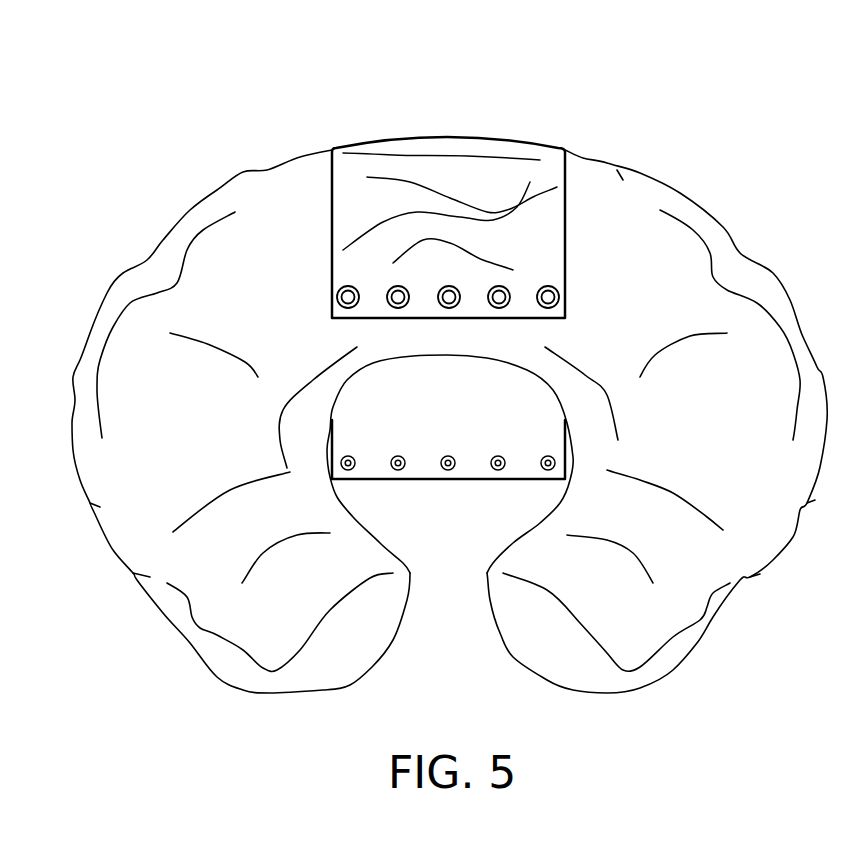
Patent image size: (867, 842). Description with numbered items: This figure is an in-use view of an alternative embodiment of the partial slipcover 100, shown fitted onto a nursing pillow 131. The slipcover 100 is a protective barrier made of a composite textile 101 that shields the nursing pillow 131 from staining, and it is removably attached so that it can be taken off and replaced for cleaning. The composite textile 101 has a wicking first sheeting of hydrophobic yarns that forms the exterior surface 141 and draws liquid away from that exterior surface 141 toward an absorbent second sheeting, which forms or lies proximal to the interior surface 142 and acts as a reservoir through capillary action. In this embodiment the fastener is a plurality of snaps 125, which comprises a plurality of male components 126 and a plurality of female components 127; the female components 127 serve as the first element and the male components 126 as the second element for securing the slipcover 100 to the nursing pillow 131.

The partial slipcover 100 is at (118, 158).
The composite textile 101 is at (480, 143).
The plurality of snaps 125 is at (555, 455).
The plurality of male components 126 is at (498, 470).
The plurality of female components 127 is at (449, 286).
The nursing pillow 131 is at (267, 203).
The exterior surface 141 is at (533, 230).
The interior surface 142 is at (490, 403).